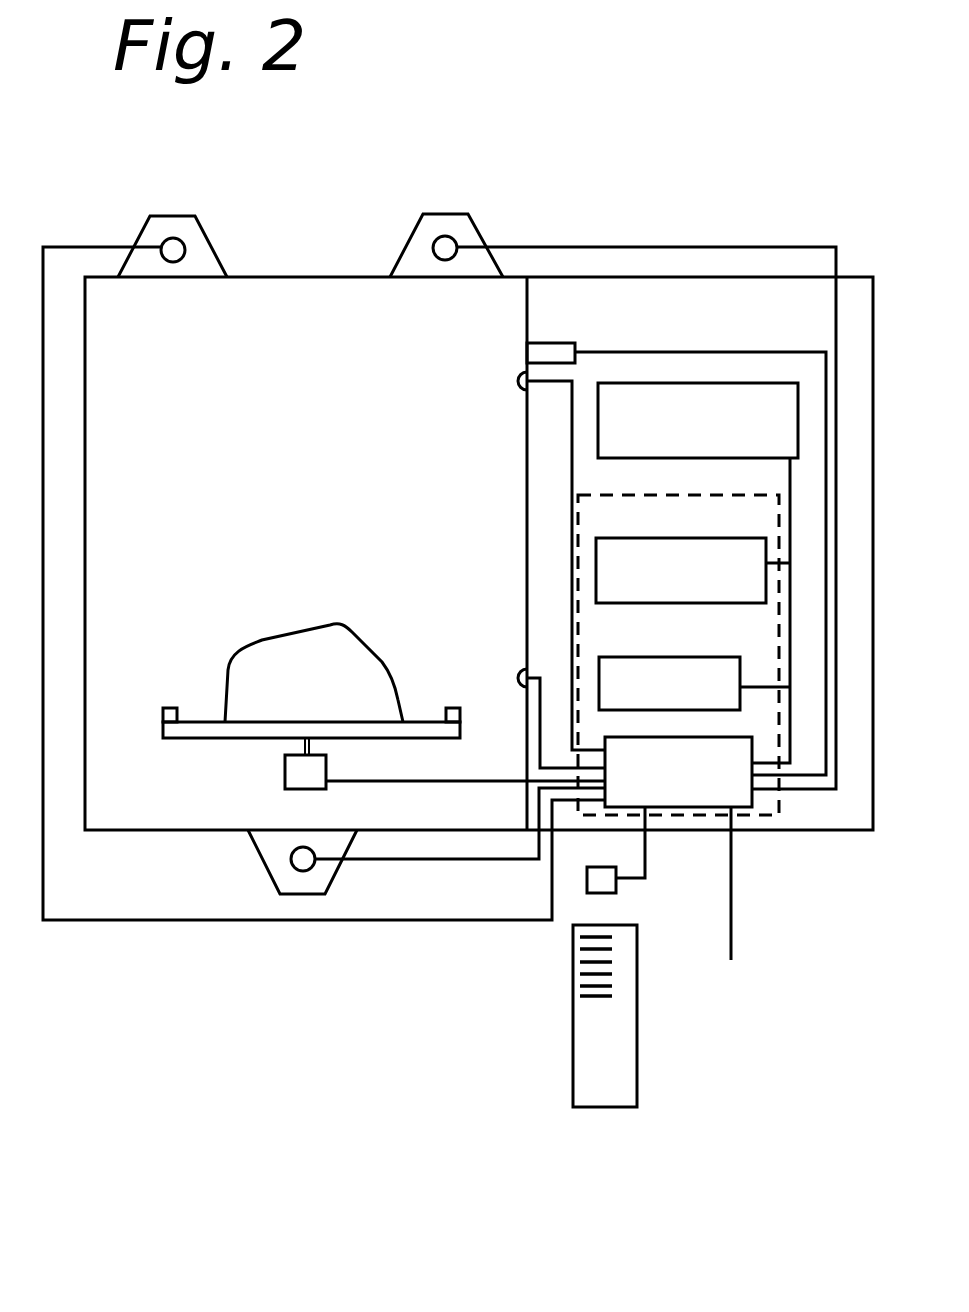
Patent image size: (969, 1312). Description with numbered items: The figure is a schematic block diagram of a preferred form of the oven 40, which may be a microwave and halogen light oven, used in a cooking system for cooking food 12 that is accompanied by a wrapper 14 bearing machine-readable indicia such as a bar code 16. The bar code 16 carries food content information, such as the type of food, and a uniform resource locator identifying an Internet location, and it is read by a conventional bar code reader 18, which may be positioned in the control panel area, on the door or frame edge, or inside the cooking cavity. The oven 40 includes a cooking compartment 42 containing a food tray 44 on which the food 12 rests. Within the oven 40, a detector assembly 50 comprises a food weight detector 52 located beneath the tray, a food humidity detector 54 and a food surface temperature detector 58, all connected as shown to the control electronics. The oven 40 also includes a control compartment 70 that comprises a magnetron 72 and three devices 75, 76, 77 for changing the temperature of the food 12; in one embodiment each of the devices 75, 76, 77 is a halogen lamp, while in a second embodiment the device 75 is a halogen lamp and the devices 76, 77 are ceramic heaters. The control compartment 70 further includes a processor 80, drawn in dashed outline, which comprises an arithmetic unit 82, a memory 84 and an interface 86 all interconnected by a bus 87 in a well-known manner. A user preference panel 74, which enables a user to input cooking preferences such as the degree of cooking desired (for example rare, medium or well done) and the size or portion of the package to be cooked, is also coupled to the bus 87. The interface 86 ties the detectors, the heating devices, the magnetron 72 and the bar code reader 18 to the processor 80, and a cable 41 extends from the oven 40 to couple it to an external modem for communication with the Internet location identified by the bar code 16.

The food 12 is at (350, 634).
The wrapper 14 is at (637, 940).
The bar code 16 is at (596, 1015).
The bar code reader 18 is at (592, 867).
The oven 40 is at (360, 258).
The cable 41 is at (735, 925).
The cooking compartment 42 is at (286, 277).
The food tray 44 is at (197, 742).
The detector assembly 50 is at (356, 491).
The food weight detector 52 is at (285, 770).
The food humidity detector 54 is at (518, 386).
The food surface temperature detector 58 is at (518, 672).
The control compartment 70 is at (696, 273).
The magnetron 72 is at (527, 353).
The user preference panel 74 is at (645, 458).
The device for changing the temperature of food 75 is at (452, 237).
The device for changing the temperature of food 76 is at (167, 238).
The device for changing the temperature of food 77 is at (291, 863).
The processor 80 is at (672, 495).
The arithmetic unit 82 is at (660, 538).
The memory 84 is at (660, 657).
The interface 86 is at (676, 737).
The bus 87 is at (790, 605).